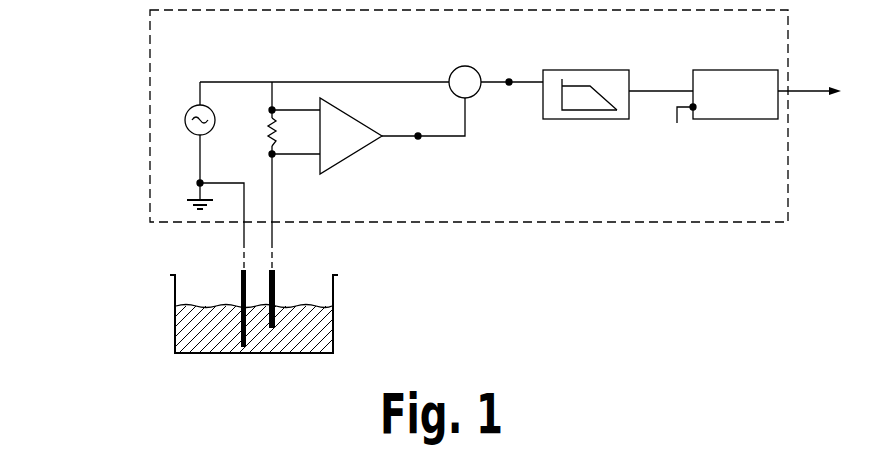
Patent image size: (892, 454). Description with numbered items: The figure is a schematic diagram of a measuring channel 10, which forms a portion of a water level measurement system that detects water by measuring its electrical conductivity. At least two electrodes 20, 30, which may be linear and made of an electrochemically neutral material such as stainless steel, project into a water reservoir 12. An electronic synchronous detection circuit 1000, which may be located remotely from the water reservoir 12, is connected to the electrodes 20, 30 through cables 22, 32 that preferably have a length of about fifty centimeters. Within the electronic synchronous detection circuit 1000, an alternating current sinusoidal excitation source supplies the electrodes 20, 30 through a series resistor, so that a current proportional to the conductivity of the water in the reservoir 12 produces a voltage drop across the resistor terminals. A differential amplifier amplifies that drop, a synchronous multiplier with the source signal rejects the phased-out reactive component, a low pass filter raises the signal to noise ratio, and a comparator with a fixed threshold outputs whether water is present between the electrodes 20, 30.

The measuring channel 10 is at (104, 121).
The electronic synchronous detection circuit 1000 is at (703, 222).
The water reservoir 12 is at (340, 317).
The electrode 20 is at (243, 347).
The cable 22 is at (243, 241).
The electrode 30 is at (273, 329).
The cable 32 is at (273, 242).